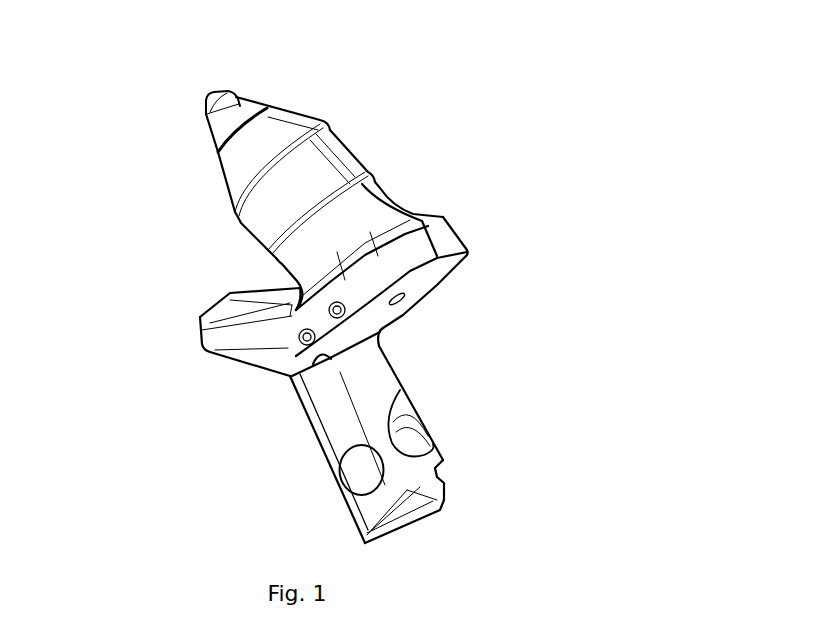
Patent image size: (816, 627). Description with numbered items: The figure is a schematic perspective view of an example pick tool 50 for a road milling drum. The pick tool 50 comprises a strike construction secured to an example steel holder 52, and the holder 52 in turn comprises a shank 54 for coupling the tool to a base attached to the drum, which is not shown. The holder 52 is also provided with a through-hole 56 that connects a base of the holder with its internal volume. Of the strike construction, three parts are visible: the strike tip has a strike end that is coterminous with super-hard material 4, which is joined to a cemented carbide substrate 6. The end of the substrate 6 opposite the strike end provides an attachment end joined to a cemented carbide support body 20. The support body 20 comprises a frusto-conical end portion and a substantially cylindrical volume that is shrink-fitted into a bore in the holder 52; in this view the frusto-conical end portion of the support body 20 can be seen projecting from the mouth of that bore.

The pick tool 50 is at (402, 105).
The super-hard material 4 is at (205, 102).
The cemented carbide substrate 6 is at (225, 97).
The cemented carbide support body 20 is at (227, 128).
The steel holder 52 is at (243, 197).
The shank 54 is at (330, 435).
The through-hole 56 is at (400, 298).